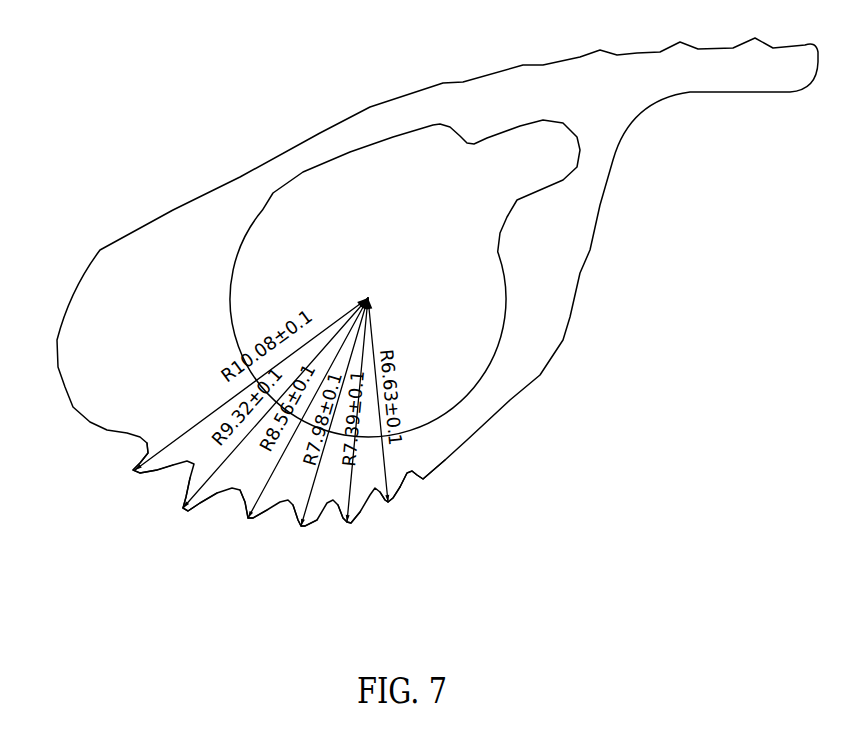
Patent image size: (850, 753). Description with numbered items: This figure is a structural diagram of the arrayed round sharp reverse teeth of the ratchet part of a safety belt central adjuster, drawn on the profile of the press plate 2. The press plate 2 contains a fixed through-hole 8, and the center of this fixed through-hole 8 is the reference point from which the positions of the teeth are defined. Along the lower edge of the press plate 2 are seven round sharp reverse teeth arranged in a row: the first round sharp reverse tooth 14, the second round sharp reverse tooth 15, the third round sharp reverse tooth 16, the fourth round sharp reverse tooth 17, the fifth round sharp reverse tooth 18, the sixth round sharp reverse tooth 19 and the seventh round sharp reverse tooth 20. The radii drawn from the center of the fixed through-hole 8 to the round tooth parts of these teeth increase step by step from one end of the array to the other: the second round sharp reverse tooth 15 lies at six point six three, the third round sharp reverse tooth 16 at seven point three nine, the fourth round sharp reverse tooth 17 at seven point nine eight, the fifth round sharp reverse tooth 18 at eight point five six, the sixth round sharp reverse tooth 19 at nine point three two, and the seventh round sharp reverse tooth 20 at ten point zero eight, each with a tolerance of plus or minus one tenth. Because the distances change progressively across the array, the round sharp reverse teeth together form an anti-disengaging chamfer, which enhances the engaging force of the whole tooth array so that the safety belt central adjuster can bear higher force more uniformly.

The press plate 2 is at (443, 103).
The fixed through-hole 8 is at (395, 273).
The first round sharp reverse tooth 14 is at (424, 480).
The second round sharp reverse tooth 15 is at (389, 503).
The third round sharp reverse tooth 16 is at (346, 522).
The fourth round sharp reverse tooth 17 is at (298, 527).
The fifth round sharp reverse tooth 18 is at (246, 518).
The sixth round sharp reverse tooth 19 is at (183, 508).
The seventh round sharp reverse tooth 20 is at (134, 470).